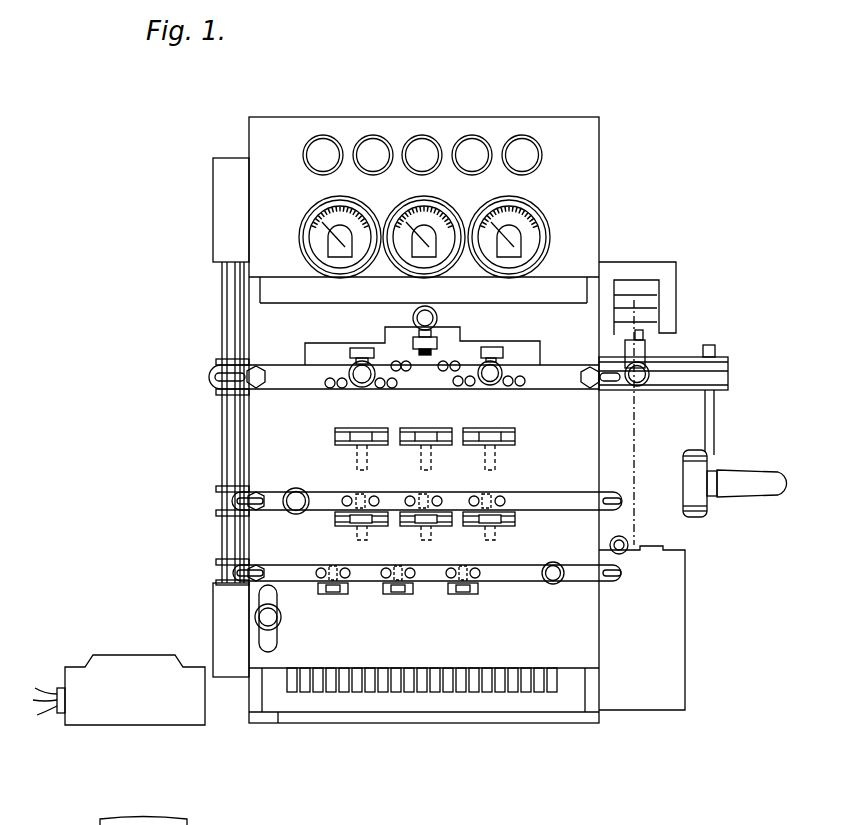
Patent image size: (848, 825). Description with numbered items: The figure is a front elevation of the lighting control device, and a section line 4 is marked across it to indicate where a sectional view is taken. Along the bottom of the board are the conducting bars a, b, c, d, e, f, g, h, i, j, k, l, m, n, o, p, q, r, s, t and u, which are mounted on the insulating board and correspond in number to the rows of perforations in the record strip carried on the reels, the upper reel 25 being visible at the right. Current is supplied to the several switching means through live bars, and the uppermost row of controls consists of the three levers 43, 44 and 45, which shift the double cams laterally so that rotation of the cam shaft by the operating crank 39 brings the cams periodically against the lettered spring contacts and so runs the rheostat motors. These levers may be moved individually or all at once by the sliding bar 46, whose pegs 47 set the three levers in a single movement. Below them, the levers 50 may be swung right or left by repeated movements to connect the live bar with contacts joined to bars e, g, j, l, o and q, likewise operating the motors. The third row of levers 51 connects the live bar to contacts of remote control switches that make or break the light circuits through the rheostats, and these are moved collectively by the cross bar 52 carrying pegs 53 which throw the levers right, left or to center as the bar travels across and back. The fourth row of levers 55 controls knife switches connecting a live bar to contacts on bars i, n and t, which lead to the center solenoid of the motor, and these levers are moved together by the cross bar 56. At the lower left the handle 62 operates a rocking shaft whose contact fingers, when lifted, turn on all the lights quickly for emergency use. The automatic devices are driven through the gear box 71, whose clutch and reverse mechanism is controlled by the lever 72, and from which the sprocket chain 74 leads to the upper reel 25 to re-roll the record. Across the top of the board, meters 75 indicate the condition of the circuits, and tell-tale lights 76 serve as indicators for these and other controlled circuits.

The section line 4- 4 is at (570, 275).
The upper reel 25 is at (620, 306).
The operating crank 39 is at (716, 428).
The lever 43 is at (492, 347).
The lever 44 is at (434, 342).
The lever 45 is at (362, 348).
The sliding bar 46 is at (549, 376).
The pegs 47 is at (455, 372).
The levers 50 is at (364, 442).
The levers 51 is at (364, 522).
The cross bar 52 is at (545, 492).
The pegs 53 is at (430, 496).
The levers 55 is at (334, 592).
The cross bar 56 is at (515, 565).
The handle 62 is at (280, 620).
The gear box 71 is at (642, 628).
The lever 72 is at (622, 554).
The sprocket chain 74 is at (637, 489).
The meters 75 is at (358, 214).
The tell-tale lights 76 is at (422, 155).
The conducting bar a is at (552, 692).
The conducting bar b is at (539, 692).
The conducting bar c is at (526, 692).
The conducting bar d is at (513, 692).
The conducting bar e is at (500, 692).
The conducting bar f is at (487, 692).
The conducting bar g is at (474, 692).
The conducting bar h is at (461, 692).
The conducting bar i is at (448, 692).
The conducting bar j is at (435, 692).
The conducting bar k is at (422, 692).
The conducting bar l is at (409, 692).
The conducting bar m is at (396, 692).
The conducting bar n is at (383, 692).
The conducting bar o is at (370, 692).
The conducting bar p is at (357, 692).
The conducting bar q is at (344, 692).
The conducting bar r is at (331, 692).
The conducting bar s is at (318, 692).
The conducting bar t is at (305, 692).
The conducting bar u is at (292, 692).